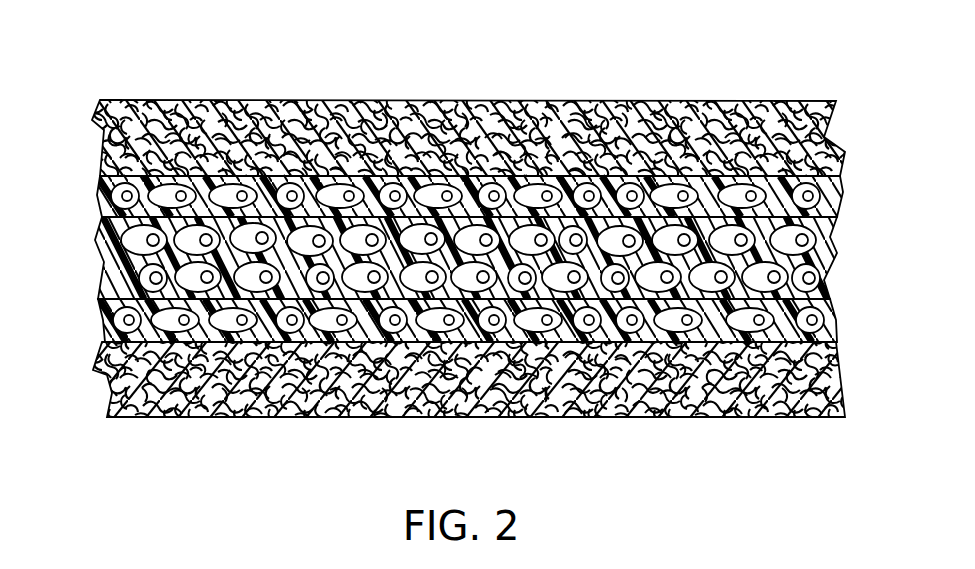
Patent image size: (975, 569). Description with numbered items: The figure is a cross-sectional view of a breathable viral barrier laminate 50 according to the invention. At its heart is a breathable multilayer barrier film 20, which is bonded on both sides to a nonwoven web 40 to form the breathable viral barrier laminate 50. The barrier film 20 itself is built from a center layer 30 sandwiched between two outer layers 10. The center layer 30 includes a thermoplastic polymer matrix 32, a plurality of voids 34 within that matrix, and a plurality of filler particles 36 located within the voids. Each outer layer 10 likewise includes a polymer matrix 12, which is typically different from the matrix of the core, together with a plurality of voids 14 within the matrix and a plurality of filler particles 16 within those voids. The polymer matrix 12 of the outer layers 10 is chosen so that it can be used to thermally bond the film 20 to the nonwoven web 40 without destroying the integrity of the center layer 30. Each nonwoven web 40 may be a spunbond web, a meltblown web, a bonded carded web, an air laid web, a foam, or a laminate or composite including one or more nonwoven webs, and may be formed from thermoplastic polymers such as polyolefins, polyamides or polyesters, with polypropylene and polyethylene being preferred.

The outer layer 10 is at (467, 261).
The polymer matrix 12 is at (841, 175).
The voids 14 is at (98, 210).
The filler particles 16 is at (100, 181).
The breathable multilayer barrier film 20 is at (852, 189).
The center layer 30 is at (838, 344).
The thermoplastic polymer matrix 32 is at (843, 238).
The voids 34 is at (112, 246).
The filler particles 36 is at (108, 298).
The nonwoven web 40 is at (462, 261).
The breathable viral barrier laminate 50 is at (756, 426).